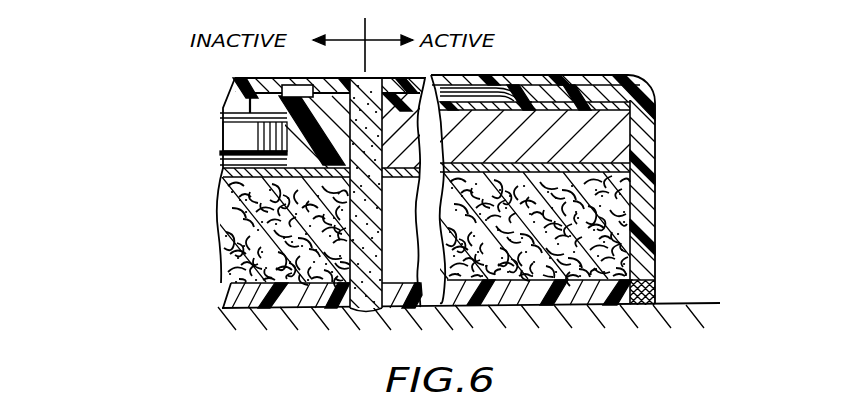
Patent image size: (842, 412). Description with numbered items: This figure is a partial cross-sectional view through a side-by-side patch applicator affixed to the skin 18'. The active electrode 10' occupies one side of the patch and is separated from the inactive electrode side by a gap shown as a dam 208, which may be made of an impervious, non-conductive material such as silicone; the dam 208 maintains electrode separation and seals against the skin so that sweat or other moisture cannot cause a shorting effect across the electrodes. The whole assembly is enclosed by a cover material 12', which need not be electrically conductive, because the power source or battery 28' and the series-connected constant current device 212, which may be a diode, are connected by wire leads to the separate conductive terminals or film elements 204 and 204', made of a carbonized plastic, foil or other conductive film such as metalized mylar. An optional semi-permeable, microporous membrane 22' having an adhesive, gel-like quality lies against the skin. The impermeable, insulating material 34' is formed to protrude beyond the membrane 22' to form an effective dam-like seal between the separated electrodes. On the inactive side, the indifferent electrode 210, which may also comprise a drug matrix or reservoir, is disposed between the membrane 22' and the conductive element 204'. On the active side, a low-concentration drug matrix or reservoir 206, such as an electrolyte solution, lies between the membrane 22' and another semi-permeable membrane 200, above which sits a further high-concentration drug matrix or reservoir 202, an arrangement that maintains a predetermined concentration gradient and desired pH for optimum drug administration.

The active electrode 10' is at (436, 171).
The cover material 12' is at (671, 202).
The skin 18' is at (507, 302).
The membrane 22' is at (411, 321).
The power source or battery 28' is at (222, 139).
The impermeable insulating material 34' is at (502, 228).
The semi-permeable membrane 200 is at (660, 153).
The high concentration drug matrix or reservoir 202 is at (657, 104).
The conductive terminal or film element 204 is at (441, 74).
The conductive terminal or film element 204' is at (387, 177).
The drug matrix or reservoir 206 is at (657, 243).
The dam 208 is at (405, 306).
The indifferent electrode 210 is at (218, 242).
The constant current device 212 is at (295, 85).